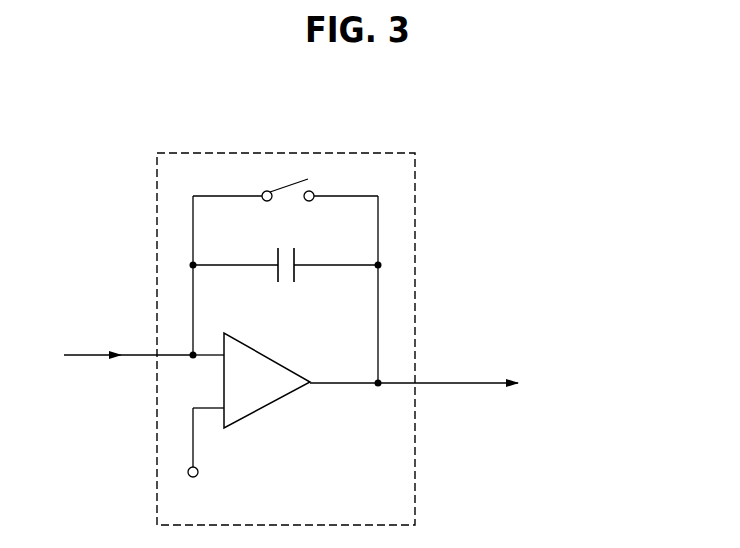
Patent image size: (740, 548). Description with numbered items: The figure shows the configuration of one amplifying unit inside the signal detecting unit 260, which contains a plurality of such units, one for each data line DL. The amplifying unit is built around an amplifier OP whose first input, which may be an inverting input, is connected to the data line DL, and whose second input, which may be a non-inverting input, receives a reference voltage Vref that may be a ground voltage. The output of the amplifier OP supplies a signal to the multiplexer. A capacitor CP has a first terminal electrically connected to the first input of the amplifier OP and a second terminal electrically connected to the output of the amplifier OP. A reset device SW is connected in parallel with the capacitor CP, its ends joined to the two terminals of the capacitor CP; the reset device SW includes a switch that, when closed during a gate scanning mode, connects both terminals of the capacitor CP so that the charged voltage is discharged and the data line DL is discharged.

The signal detecting unit 260 is at (538, 157).
The reset device SW is at (285, 204).
The capacitor CP is at (286, 279).
The amplifier OP is at (250, 380).
The reference voltage Vref is at (193, 459).
The data line DL is at (113, 356).